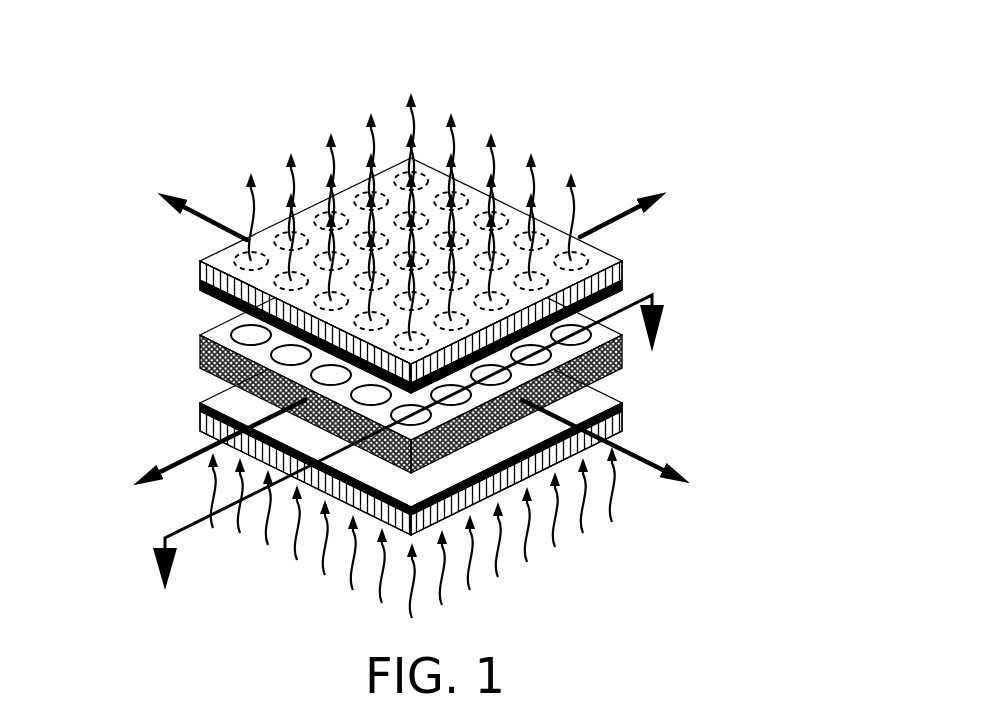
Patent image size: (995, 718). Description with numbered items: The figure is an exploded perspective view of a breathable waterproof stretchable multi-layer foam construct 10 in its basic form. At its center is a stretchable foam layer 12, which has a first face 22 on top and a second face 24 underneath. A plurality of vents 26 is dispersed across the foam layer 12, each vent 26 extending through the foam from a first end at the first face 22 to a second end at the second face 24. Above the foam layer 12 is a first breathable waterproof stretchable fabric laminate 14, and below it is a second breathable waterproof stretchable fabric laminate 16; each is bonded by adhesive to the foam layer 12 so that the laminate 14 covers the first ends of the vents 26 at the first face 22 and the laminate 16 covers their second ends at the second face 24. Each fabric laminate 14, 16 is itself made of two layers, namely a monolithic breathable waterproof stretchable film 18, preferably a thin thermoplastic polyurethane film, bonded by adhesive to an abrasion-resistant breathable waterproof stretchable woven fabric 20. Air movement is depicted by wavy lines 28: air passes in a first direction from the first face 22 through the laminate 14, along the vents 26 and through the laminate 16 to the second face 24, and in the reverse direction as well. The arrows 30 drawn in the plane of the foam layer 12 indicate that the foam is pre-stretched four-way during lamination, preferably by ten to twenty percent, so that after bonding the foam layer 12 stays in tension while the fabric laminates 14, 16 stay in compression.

The breathable waterproof stretchable multi-layer foam construct 10 is at (433, 108).
The stretchable foam layer 12 is at (449, 351).
The first breathable waterproof stretchable fabric laminate 14 is at (625, 262).
The second breathable waterproof stretchable fabric laminate 16 is at (623, 402).
The monolithic breathable waterproof stretchable film 18 is at (200, 286).
The breathable waterproof stretchable fabric 20 is at (200, 263).
The first face 22 is at (623, 343).
The second face 24 is at (623, 365).
The vents 26 is at (251, 334).
The wavy lines 28 is at (333, 130).
The arrows 30 is at (223, 220).